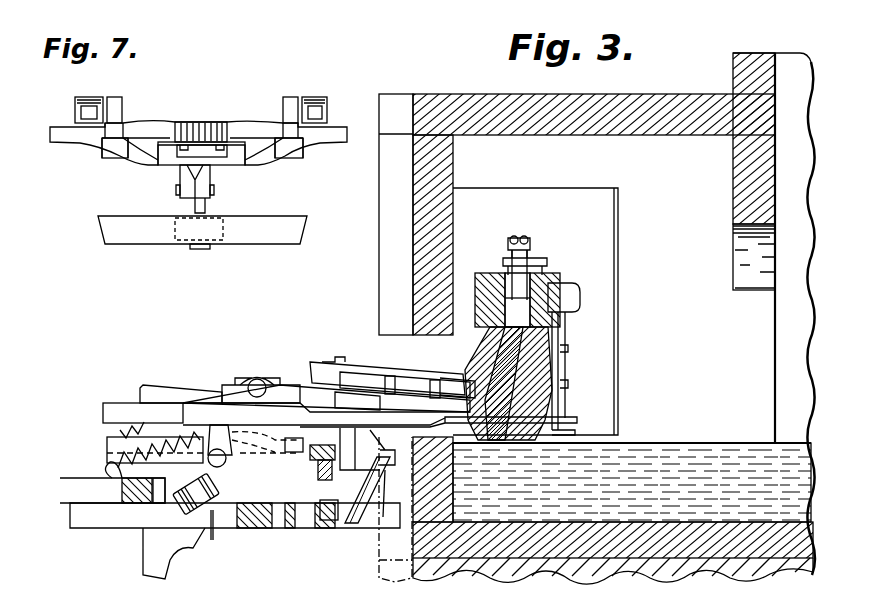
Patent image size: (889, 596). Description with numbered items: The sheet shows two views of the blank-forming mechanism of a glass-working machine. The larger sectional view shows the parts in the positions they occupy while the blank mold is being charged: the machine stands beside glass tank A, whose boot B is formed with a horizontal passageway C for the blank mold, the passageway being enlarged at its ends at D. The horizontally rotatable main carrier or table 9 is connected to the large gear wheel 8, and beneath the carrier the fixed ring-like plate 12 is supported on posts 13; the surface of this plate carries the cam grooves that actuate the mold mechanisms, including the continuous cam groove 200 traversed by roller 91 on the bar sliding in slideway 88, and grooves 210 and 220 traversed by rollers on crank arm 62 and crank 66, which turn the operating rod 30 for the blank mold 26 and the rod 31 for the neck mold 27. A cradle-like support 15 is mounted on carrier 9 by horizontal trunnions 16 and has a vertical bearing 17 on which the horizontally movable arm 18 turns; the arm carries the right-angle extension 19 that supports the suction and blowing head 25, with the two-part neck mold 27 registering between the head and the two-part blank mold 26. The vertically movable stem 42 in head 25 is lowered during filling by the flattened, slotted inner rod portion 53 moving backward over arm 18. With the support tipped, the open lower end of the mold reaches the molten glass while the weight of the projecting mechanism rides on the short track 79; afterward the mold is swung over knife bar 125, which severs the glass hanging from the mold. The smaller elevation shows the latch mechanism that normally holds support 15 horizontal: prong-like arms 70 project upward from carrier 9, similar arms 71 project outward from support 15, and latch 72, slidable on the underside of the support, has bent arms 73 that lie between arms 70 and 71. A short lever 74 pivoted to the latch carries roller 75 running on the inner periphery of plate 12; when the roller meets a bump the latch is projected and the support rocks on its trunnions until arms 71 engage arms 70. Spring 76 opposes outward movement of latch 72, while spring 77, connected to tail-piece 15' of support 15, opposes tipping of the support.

In FIG. 3, the glass tank A is at (597, 314).
In FIG. 3, the boot B is at (613, 453).
In FIG. 3, the horizontal passageway C is at (438, 349).
In FIG. 3, the enlarged ends of passageway D is at (603, 243).
In FIG. 3, the large gear wheel 8 is at (138, 503).
In FIG. 3, the main carrier 9 is at (112, 410).
In FIG. 7, the ring-like plate 12 is at (267, 244).
In FIG. 3, the posts 13 is at (185, 564).
In FIG. 7, the cradle-like support 15 is at (198, 128).
In FIG. 3, the tail-piece 15' is at (175, 372).
In FIG. 7, the horizontal trunnions 16 is at (327, 109).
In FIG. 3, the horizontal trunnions 16 is at (257, 380).
In FIG. 7, the vertical bearing 17 is at (220, 123).
In FIG. 3, the horizontally movable arm 18 is at (315, 398).
In FIG. 3, the right angle extension 19 is at (572, 300).
In FIG. 3, the suction and blowing head 25 is at (540, 290).
In FIG. 3, the blank mold 26 is at (548, 383).
In FIG. 3, the neck mold 27 is at (558, 331).
In FIG. 3, the operating rod 30 is at (415, 383).
In FIG. 3, the rod 31 is at (455, 378).
In FIG. 3, the vertically movable stem 42 is at (512, 303).
In FIG. 3, the inner portion of rod 53 is at (332, 390).
In FIG. 3, the crank arm 62 is at (310, 458).
In FIG. 3, the crank 66 is at (318, 479).
In FIG. 7, the prong-like arms 70 is at (127, 158).
In FIG. 3, the prong-like arms 70 is at (370, 451).
In FIG. 7, the arms 71 is at (120, 130).
In FIG. 3, the arms 71 is at (350, 410).
In FIG. 7, the latch 72 is at (212, 152).
In FIG. 3, the latch 72 is at (396, 497).
In FIG. 7, the bent arms 73 is at (120, 145).
In FIG. 7, the short lever 74 is at (205, 204).
In FIG. 3, the short lever 74 is at (212, 479).
In FIG. 3, the roller 75 is at (213, 518).
In FIG. 3, the spring 76 is at (200, 443).
In FIG. 3, the spring 77 is at (110, 444).
In FIG. 3, the track 79 is at (377, 463).
In FIG. 3, the slideway 88 is at (112, 451).
In FIG. 3, the roller 91 is at (345, 531).
In FIG. 3, the knife bar 125 is at (573, 410).
In FIG. 3, the continuous cam groove 200 is at (323, 528).
In FIG. 3, the cam groove 210 is at (307, 518).
In FIG. 3, the groove 220 is at (277, 516).